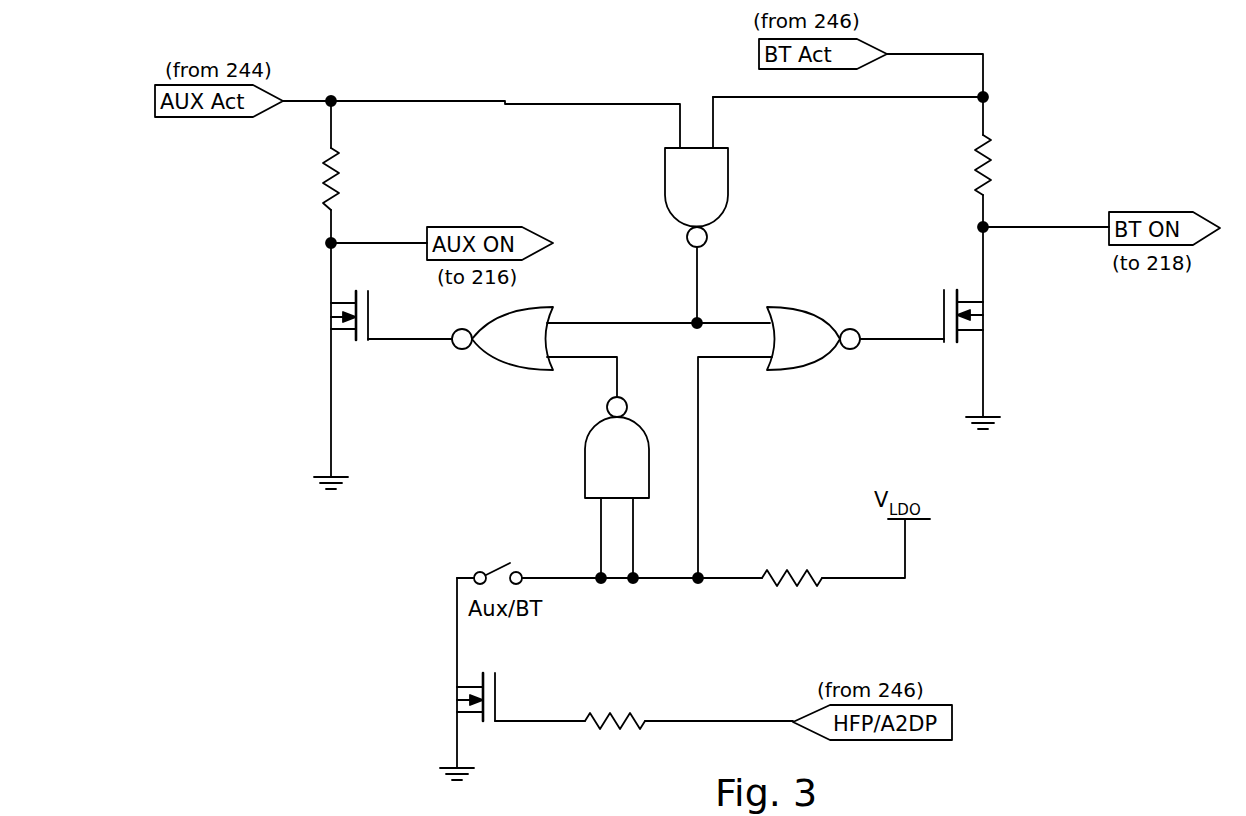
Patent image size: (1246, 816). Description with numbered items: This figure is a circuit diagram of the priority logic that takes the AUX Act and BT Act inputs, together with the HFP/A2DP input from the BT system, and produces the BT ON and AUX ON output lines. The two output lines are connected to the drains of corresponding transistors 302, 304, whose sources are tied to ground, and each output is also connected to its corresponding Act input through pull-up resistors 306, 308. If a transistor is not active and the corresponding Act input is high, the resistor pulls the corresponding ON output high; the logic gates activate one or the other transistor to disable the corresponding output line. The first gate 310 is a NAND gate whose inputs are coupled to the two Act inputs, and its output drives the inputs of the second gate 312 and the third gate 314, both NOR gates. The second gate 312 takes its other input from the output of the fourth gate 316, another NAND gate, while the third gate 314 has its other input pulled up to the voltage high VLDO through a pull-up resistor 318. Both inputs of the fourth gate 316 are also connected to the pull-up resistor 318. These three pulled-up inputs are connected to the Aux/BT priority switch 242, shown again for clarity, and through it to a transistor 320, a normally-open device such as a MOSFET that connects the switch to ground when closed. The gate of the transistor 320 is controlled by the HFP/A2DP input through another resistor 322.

The Aux/BT priority switch 242 is at (476, 572).
The transistor 302 is at (331, 313).
The transistor 304 is at (980, 312).
The pull-up resistor 306 is at (324, 177).
The pull-up resistor 308 is at (975, 160).
The first gate 310 is at (665, 182).
The second gate 312 is at (515, 371).
The third gate 314 is at (797, 372).
The fourth gate 316 is at (584, 467).
The pull-up resistor 318 is at (788, 592).
The transistor 320 is at (457, 692).
The resistor 322 is at (612, 712).